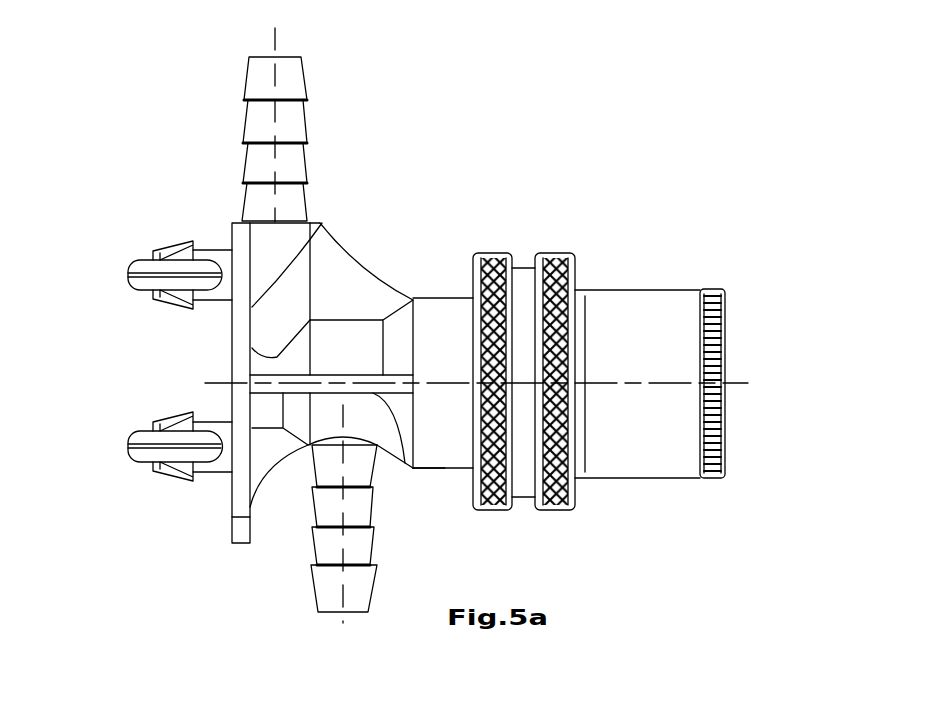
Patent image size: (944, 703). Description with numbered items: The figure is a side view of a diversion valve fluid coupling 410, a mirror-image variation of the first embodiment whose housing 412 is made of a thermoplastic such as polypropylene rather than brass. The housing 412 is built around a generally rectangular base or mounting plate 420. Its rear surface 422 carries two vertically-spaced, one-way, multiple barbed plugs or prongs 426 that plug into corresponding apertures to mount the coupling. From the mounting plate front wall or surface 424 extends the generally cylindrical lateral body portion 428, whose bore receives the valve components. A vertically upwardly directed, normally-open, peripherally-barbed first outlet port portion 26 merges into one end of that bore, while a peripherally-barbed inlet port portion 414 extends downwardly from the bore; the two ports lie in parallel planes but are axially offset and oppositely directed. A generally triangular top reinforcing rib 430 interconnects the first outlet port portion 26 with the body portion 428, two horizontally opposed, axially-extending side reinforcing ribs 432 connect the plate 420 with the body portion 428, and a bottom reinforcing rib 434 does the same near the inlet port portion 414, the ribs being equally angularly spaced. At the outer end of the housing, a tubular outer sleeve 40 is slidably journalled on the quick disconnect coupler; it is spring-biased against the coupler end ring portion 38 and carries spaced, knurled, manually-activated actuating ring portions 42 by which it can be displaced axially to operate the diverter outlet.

The first outlet port portion 26 is at (292, 80).
The diversion valve fluid coupling 410 is at (619, 318).
The housing 412 is at (438, 296).
The actuating ring portions 42 is at (543, 253).
The tubular outer sleeve 40 is at (648, 312).
The coupler end ring portion 38 is at (722, 290).
The mounting plate front wall 424 is at (322, 223).
The top reinforcing rib 430 is at (365, 262).
The barbed plugs 426 is at (158, 258).
The rear surface 422 is at (230, 340).
The mounting plate 420 is at (238, 488).
The bottom reinforcing rib 434 is at (262, 487).
The inlet port portion 414 is at (328, 585).
The side reinforcing ribs 432 is at (405, 463).
The lateral body portion 428 is at (445, 470).